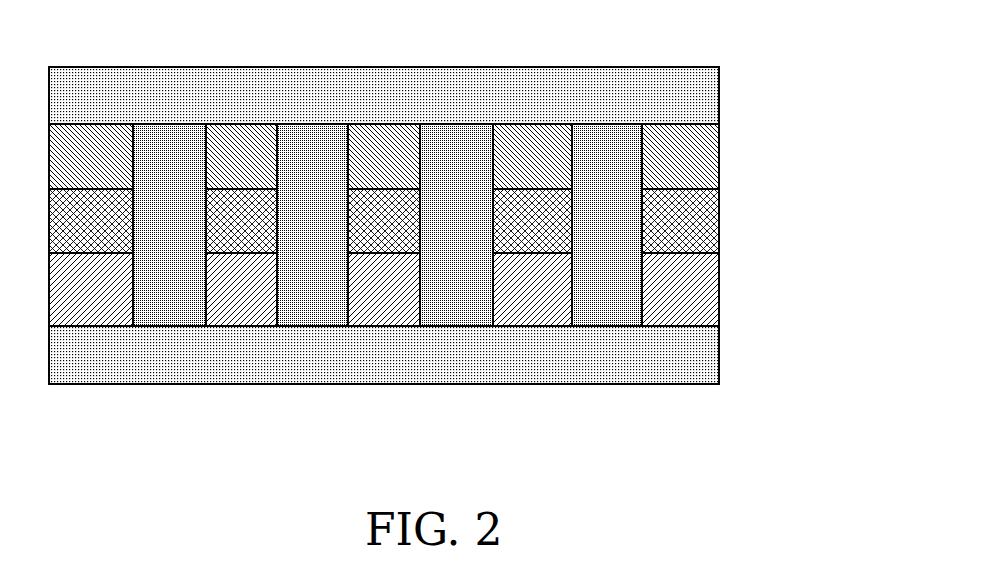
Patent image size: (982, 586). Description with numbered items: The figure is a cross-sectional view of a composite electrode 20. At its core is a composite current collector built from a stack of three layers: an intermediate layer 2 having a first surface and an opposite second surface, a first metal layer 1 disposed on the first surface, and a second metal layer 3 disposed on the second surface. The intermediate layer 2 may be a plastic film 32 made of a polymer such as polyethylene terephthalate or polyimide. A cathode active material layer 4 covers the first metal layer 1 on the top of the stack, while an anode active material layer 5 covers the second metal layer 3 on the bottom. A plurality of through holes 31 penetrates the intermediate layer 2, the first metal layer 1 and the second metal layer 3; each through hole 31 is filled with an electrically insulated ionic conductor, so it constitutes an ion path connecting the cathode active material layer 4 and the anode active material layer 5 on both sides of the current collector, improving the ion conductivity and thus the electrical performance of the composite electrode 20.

The first metal layer 1 is at (719, 125).
The intermediate layer 2 is at (719, 190).
The second metal layer 3 is at (719, 254).
The cathode active material layer 4 is at (719, 68).
The anode active material layer 5 is at (719, 327).
The composite electrode 20 is at (392, 462).
The through hole 31 is at (169, 326).
The plastic film 32 is at (102, 223).